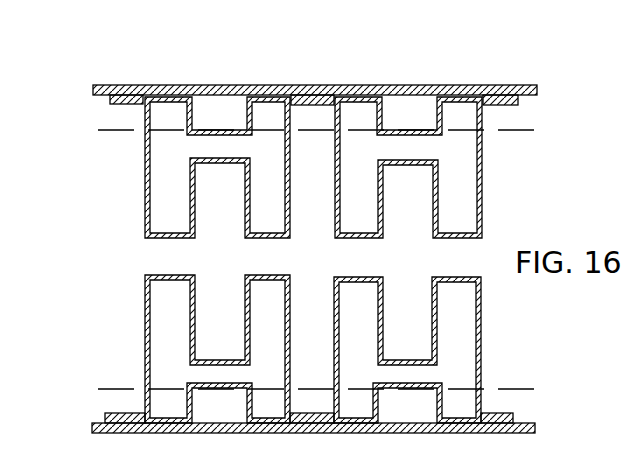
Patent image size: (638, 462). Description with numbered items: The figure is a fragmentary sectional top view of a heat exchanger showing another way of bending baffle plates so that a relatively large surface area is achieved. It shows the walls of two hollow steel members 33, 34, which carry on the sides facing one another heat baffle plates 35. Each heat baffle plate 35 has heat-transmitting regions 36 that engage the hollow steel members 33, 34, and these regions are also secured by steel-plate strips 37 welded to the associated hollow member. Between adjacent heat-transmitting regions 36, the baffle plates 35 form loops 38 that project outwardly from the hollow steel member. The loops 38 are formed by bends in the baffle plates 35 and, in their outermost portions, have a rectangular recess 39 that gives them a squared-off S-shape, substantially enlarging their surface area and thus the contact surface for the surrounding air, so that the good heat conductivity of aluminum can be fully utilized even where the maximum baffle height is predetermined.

The hollow steel member 33 is at (535, 143).
The hollow steel member 34 is at (530, 379).
The heat baffle plate 35 is at (295, 260).
The heat-transmitting region 36 is at (118, 88).
The steel-plate strip 37 is at (112, 102).
The loop 38 is at (138, 222).
The rectangular recess 39 is at (223, 167).